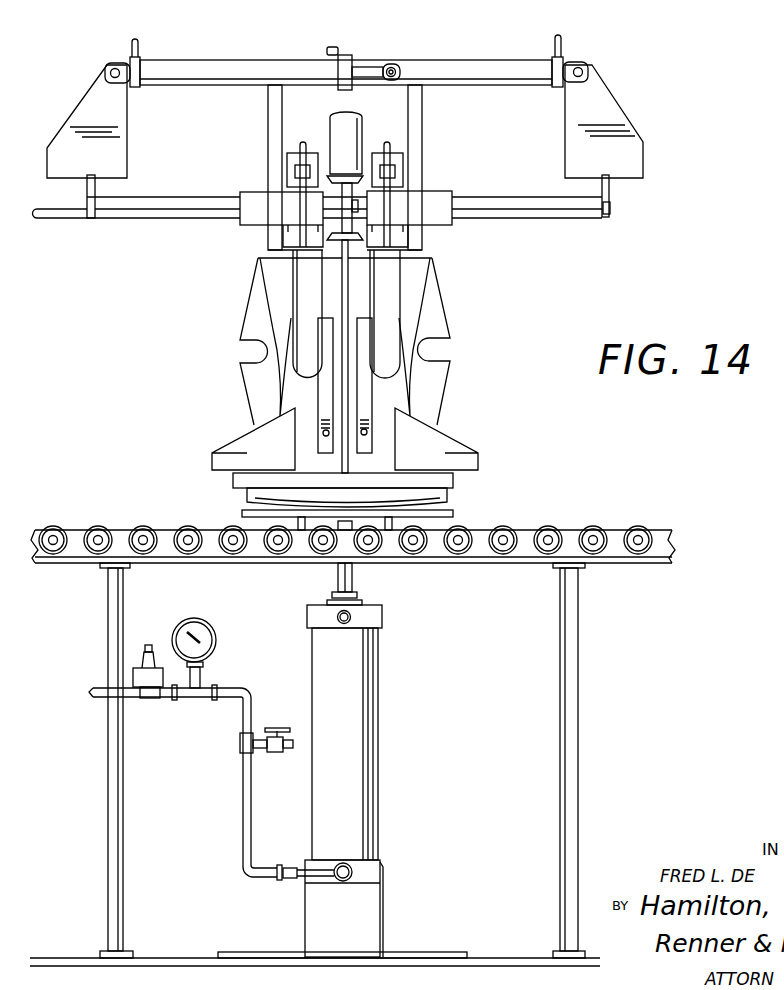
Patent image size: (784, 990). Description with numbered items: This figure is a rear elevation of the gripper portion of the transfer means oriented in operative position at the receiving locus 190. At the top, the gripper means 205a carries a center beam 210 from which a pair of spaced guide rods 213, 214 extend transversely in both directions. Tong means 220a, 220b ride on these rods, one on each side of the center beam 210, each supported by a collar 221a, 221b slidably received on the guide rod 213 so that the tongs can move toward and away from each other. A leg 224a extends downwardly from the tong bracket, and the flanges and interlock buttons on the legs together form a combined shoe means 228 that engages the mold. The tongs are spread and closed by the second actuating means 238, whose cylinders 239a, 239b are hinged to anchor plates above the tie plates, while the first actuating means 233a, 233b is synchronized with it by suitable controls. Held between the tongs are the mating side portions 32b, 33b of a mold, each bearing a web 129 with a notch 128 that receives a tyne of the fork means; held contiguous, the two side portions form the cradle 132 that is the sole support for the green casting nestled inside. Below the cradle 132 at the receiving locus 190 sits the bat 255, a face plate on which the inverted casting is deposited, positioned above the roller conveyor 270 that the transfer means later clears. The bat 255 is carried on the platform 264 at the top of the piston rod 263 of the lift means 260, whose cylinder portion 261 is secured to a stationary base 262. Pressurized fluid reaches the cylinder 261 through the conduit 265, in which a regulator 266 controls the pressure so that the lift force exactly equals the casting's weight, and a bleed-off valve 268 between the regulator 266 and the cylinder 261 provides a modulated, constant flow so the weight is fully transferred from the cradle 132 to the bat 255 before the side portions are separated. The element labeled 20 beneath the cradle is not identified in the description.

The base plate 20 is at (235, 493).
The side portion 32b is at (443, 437).
The side portion 33b is at (240, 438).
The notch 128 is at (243, 346).
The web 129 is at (430, 308).
The cradle 132 is at (448, 275).
The receiving locus 190 is at (402, 527).
The gripper means 205a is at (321, 43).
The center beam 210 is at (333, 173).
The guide rod 213 is at (573, 208).
The guide rod 214 is at (125, 222).
The tong means 220a is at (445, 247).
The tong means 220b is at (258, 250).
The collar 221a is at (448, 215).
The collar 221b is at (252, 222).
The leg 224a is at (387, 307).
The shoe means 228 is at (265, 372).
The first actuating means 233a is at (412, 168).
The first actuating means 233b is at (280, 170).
The second actuating means 238 is at (492, 45).
The cylinder 239a is at (436, 85).
The cylinder 239b is at (210, 80).
The bat 255 is at (445, 511).
The lift means 260 is at (402, 717).
The cylinder portion 261 is at (363, 665).
The stationary base 262 is at (387, 908).
The piston rod 263 is at (348, 573).
The platform 264 is at (313, 520).
The conduit 265 is at (243, 807).
The regulator 266 is at (133, 677).
The valve 268 is at (280, 728).
The conveyor 270 is at (612, 520).